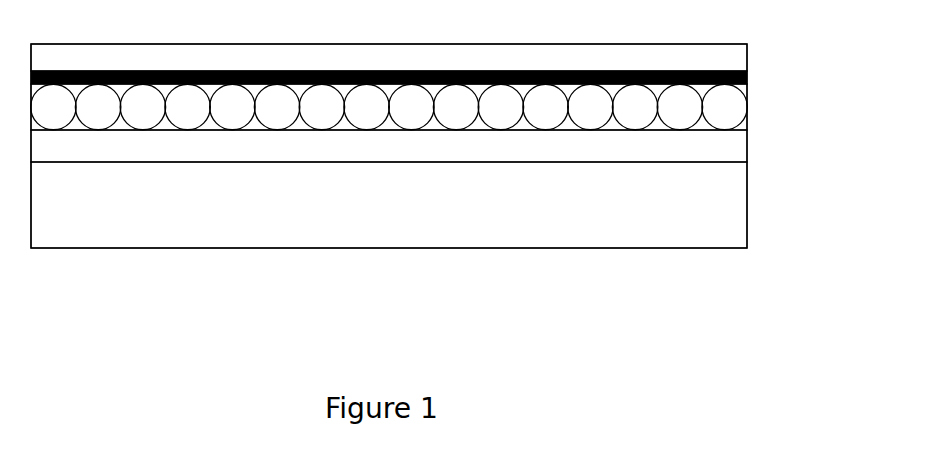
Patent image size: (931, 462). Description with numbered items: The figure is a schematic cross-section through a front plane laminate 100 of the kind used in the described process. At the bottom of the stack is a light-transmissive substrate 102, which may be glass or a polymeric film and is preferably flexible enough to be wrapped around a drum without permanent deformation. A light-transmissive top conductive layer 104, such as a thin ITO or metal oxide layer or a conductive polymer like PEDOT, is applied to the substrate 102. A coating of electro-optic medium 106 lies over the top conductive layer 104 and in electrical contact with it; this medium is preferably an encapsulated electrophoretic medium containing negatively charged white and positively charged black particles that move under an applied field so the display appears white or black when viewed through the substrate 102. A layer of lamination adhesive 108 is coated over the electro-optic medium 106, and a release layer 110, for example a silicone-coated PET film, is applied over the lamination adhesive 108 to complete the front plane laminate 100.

The front plane laminate 100 is at (648, 265).
The light-transmissive substrate 102 is at (389, 205).
The top conductive layer 104 is at (748, 148).
The electro-optic medium 106 is at (748, 105).
The lamination adhesive 108 is at (748, 77).
The release layer 110 is at (748, 65).